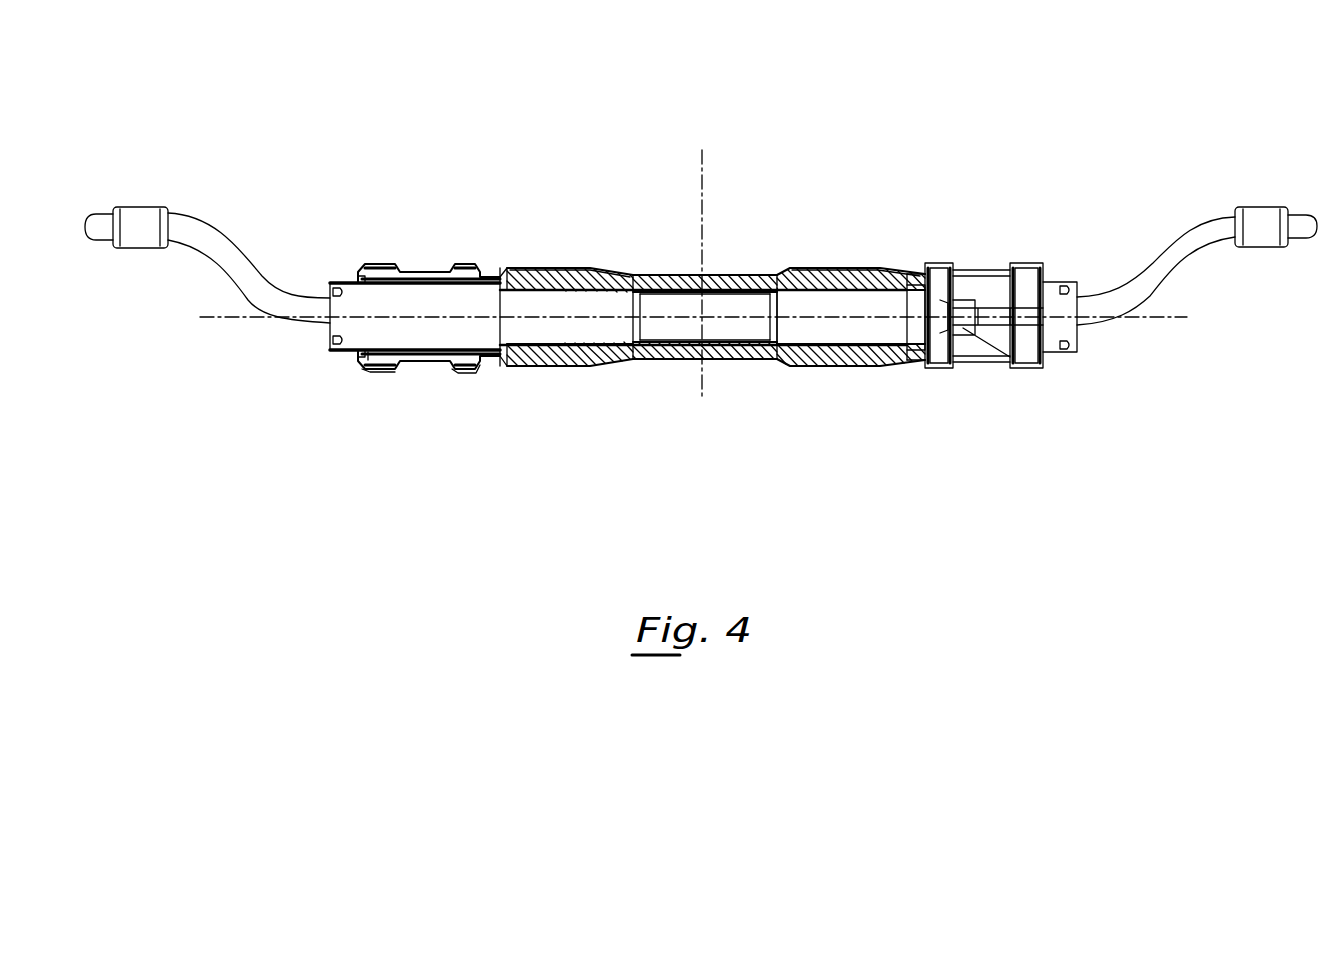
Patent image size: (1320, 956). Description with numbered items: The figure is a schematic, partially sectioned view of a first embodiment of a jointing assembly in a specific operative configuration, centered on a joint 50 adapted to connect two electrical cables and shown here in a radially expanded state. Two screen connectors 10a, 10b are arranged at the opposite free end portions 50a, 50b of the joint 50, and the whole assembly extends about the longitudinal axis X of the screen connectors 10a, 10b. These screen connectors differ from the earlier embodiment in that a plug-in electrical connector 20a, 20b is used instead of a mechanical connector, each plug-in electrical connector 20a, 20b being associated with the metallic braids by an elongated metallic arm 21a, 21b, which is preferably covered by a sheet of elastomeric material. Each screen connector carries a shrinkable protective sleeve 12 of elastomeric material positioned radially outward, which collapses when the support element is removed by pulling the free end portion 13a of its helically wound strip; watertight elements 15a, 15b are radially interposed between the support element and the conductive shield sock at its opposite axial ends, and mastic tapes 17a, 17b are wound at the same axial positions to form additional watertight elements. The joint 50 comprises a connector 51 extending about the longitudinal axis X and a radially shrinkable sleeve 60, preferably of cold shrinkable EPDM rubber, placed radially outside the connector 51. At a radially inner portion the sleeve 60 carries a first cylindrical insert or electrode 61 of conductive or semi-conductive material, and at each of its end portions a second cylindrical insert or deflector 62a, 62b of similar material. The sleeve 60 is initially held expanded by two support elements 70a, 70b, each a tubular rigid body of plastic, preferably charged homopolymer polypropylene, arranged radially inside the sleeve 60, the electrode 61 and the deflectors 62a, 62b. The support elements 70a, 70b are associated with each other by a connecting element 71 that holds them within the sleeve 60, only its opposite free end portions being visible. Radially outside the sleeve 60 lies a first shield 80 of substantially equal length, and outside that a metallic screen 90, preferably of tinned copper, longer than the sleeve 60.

The longitudinal axis X is at (205, 322).
The screen connector 10a is at (998, 410).
The screen connector 10b is at (423, 410).
The shrinkable protective sleeve 12 is at (410, 258).
The free end portion 13a is at (350, 258).
The watertight element 15a is at (337, 438).
The mastic tape 17a is at (352, 372).
The watertight element 15b is at (499, 470).
The mastic tape 17b is at (458, 372).
The plug-in electrical connector 20a is at (1262, 228).
The plug-in electrical connector 20b is at (140, 215).
The elongated metallic arm 21a is at (1172, 255).
The elongated metallic arm 21b is at (232, 250).
The joint 50 is at (739, 405).
The free end portion 50a is at (911, 410).
The free end portion 50b is at (496, 396).
The connector 51 is at (675, 326).
The radially shrinkable sleeve 60 is at (650, 272).
The first cylindrical insert (electrode) 61 is at (737, 273).
The second cylindrical insert (deflector) 62a is at (905, 268).
The second cylindrical insert (deflector) 62b is at (495, 262).
The support element 70a is at (855, 332).
The support element 70b is at (560, 332).
The connecting element 71 is at (333, 289).
The first shield 80 is at (592, 266).
The metallic screen 90 is at (800, 266).